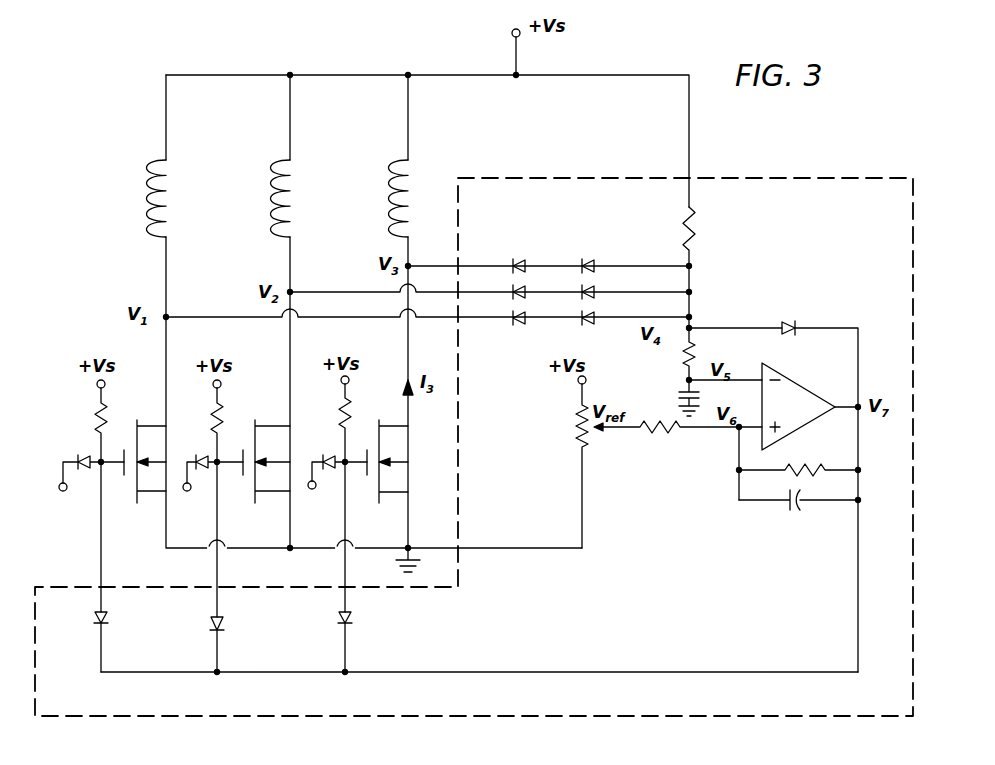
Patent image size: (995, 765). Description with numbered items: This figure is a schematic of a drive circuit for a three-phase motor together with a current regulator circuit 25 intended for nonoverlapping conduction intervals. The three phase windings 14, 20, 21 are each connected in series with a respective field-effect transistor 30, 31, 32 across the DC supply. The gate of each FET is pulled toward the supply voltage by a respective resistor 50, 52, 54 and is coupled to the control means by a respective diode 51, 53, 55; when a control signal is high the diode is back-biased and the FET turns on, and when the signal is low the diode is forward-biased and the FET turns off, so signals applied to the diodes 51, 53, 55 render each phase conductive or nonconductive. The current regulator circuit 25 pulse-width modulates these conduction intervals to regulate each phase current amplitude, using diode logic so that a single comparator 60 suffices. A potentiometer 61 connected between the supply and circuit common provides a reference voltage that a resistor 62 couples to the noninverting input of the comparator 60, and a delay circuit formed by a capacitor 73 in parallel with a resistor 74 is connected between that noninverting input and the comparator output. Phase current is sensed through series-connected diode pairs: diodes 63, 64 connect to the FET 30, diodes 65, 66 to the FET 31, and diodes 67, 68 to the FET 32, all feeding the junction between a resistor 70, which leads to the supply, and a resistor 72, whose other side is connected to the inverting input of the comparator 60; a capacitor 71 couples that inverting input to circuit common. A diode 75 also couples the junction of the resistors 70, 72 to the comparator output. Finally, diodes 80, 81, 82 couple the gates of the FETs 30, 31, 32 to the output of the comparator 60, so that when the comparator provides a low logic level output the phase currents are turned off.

The phase winding 14 is at (160, 171).
The phase winding 20 is at (285, 172).
The phase winding 21 is at (408, 171).
The current regulator circuit 25 is at (913, 275).
The field-effect transistor 30 is at (150, 493).
The field-effect transistor 31 is at (272, 494).
The field-effect transistor 32 is at (398, 494).
The resistor 50 is at (92, 416).
The diode 51 is at (74, 456).
The resistor 52 is at (210, 420).
The diode 53 is at (198, 460).
The resistor 54 is at (338, 418).
The diode 55 is at (328, 458).
The comparator 60 is at (810, 384).
The potentiometer 61 is at (574, 432).
The resistor 62 is at (682, 432).
The diode 63 is at (516, 325).
The diode 64 is at (586, 325).
The diode 65 is at (512, 287).
The diode 66 is at (594, 288).
The diode 67 is at (516, 258).
The diode 68 is at (583, 258).
The resistor 70 is at (680, 226).
The capacitor 71 is at (682, 392).
The resistor 72 is at (698, 362).
The capacitor 73 is at (783, 510).
The resistor 74 is at (812, 450).
The diode 75 is at (782, 318).
The diode 80 is at (106, 616).
The diode 81 is at (222, 620).
The diode 82 is at (350, 616).